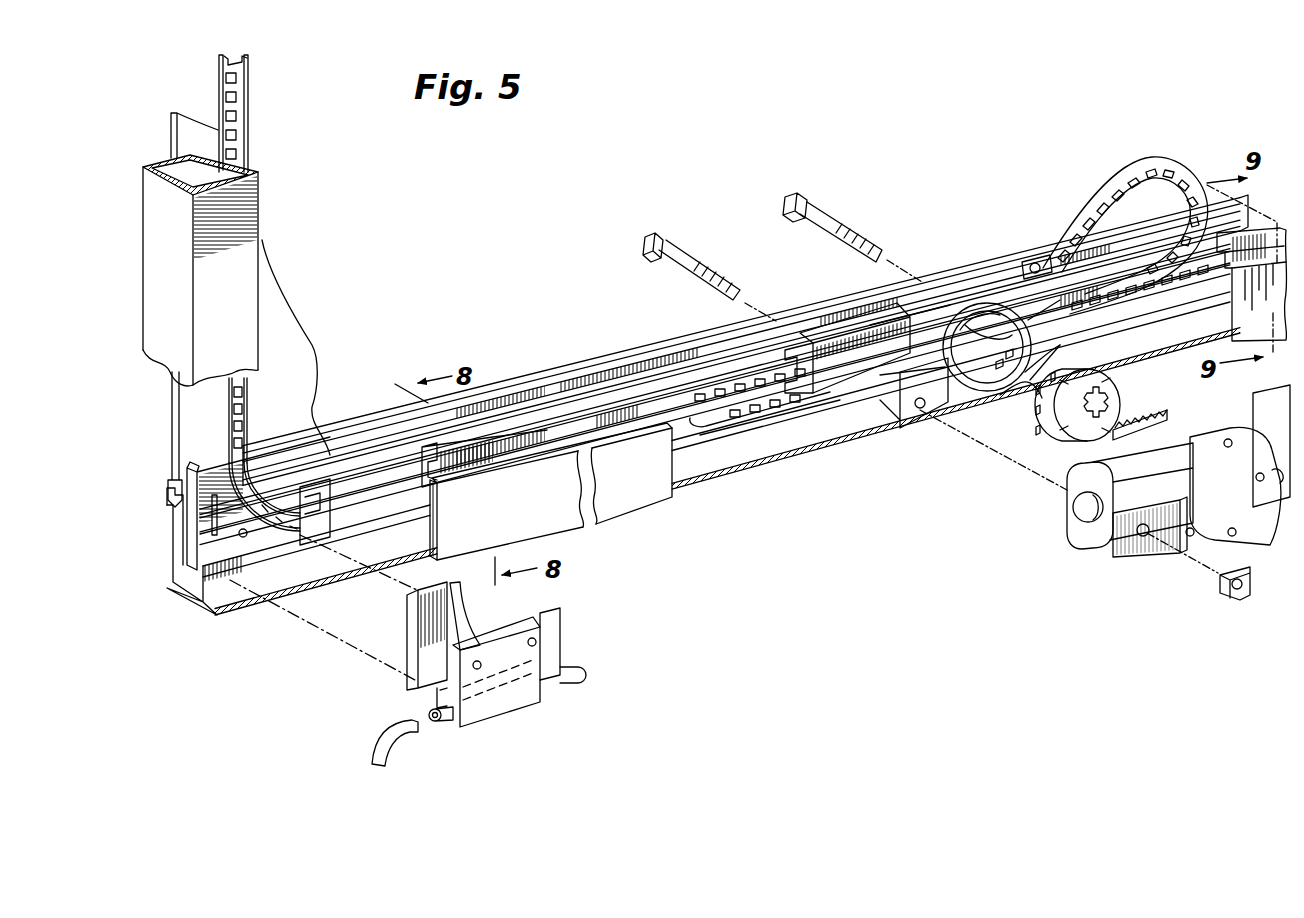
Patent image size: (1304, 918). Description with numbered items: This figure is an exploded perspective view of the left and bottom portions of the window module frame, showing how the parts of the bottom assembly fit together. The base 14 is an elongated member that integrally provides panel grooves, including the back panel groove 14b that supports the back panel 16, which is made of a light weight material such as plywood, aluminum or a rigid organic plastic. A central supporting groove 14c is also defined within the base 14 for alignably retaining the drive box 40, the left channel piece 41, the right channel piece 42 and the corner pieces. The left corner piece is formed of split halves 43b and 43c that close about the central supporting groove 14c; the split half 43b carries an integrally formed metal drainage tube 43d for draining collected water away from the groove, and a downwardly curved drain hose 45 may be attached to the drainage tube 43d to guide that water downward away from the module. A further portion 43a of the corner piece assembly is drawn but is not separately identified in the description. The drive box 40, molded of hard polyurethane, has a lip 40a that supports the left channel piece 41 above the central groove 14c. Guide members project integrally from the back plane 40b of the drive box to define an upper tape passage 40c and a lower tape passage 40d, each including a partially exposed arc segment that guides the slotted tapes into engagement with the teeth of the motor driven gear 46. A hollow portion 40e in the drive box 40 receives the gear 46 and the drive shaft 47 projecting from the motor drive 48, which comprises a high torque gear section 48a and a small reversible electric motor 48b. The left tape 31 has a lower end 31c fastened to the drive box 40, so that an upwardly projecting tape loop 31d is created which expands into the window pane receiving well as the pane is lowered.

The base 14 is at (633, 520).
The back panel groove 14b is at (587, 372).
The central supporting groove 14c is at (258, 565).
The back panel 16 is at (273, 297).
The left tape 31 is at (250, 130).
The lower end of the left tape 31c is at (1045, 252).
The tape loop 31d is at (1130, 157).
The drive box 40 is at (942, 290).
The lip 40a is at (900, 423).
The back plane 40b is at (1055, 300).
The upper tape passage 40c is at (973, 352).
The lower tape passage 40d is at (1037, 387).
The hollow portion 40e is at (1042, 398).
The left channel piece 41 is at (372, 493).
The right channel piece 42 is at (1133, 320).
The tape guide bend 43a is at (272, 460).
The split half of left corner piece 43b is at (418, 667).
The split half of left corner piece 43c is at (203, 540).
The drainage tube 43d is at (443, 718).
The drain hose 45 is at (377, 737).
The motor driven gear 46 is at (1117, 390).
The drive shaft 47 is at (1117, 423).
The motor drive 48 is at (1105, 502).
The high torque gear section 48a is at (1233, 507).
The reversible electric motor 48b is at (1127, 512).